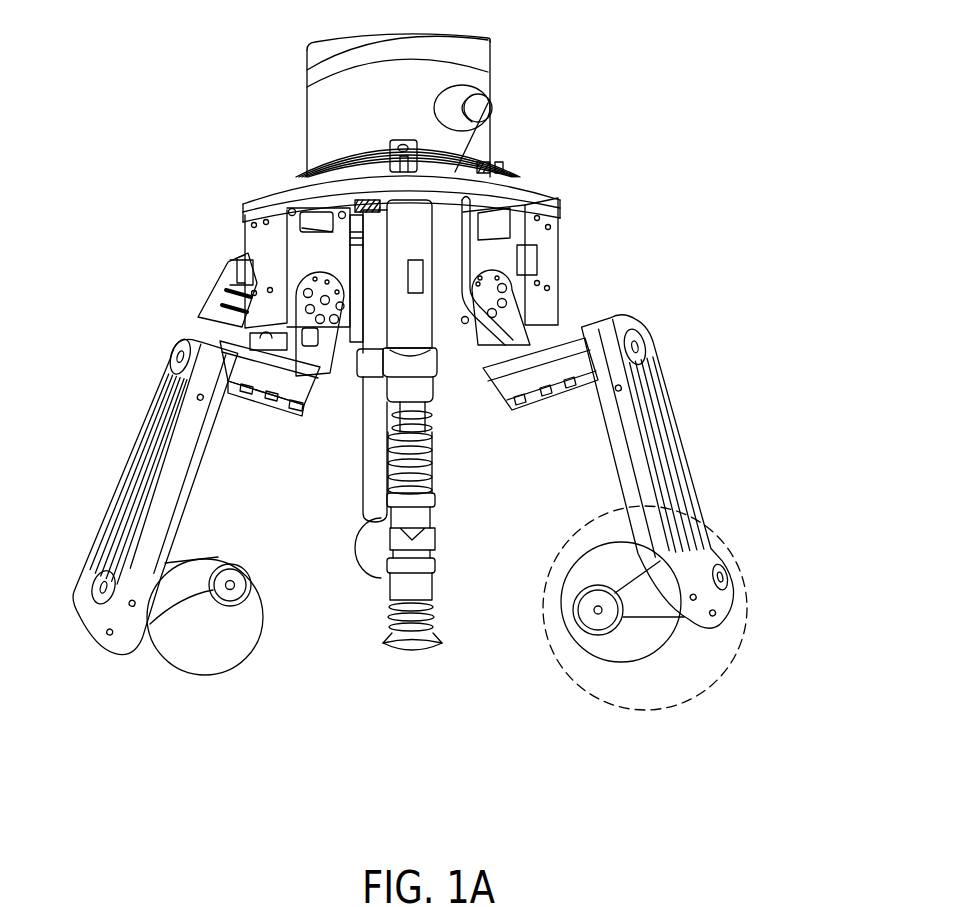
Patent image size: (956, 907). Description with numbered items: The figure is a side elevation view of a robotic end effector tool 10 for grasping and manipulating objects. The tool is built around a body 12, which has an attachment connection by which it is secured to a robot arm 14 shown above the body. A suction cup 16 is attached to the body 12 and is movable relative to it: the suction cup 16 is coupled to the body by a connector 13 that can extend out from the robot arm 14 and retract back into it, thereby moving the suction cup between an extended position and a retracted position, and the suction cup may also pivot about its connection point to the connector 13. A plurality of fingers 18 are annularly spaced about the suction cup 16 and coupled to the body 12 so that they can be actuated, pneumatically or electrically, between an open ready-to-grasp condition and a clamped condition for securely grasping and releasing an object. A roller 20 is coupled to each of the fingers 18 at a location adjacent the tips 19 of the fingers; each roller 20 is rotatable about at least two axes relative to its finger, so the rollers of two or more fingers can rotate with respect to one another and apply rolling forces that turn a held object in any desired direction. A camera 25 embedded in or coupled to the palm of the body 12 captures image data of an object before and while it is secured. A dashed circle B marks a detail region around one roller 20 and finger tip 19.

The robotic end effector tool 10 is at (724, 195).
The body 12 is at (526, 190).
The connector 13 is at (417, 250).
The robot arm 14 is at (489, 45).
The suction cup 16 is at (426, 603).
The fingers 18 is at (162, 505).
The tips 19 is at (125, 642).
The roller 20 is at (242, 640).
The camera 25 is at (356, 205).
The detail region B is at (753, 593).